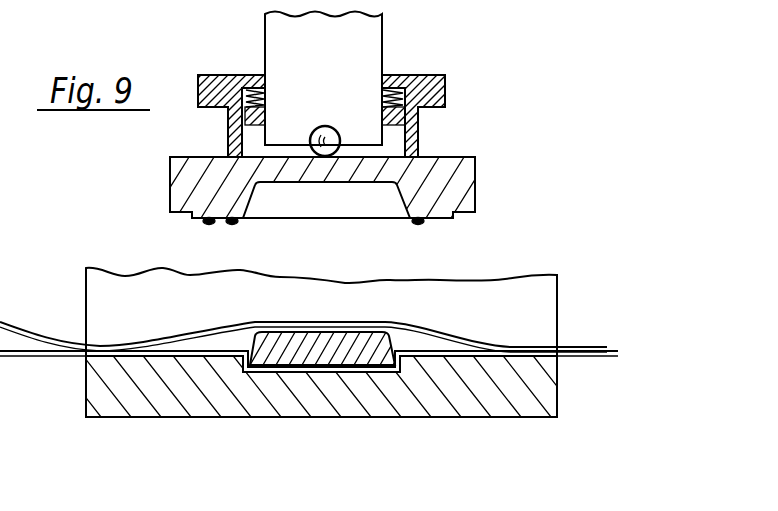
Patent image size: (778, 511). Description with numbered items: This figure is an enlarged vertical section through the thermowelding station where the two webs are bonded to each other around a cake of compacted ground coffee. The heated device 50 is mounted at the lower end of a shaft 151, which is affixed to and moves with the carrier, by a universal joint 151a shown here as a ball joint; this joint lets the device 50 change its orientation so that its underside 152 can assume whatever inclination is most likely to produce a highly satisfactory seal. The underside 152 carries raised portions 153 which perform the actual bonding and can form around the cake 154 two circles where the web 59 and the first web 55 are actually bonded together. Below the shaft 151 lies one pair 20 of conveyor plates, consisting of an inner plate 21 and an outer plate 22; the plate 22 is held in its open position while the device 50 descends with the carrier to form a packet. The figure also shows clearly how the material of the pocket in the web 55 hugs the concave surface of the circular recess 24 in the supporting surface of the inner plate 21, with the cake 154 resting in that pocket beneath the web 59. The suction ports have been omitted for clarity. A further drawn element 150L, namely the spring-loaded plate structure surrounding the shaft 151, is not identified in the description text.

The shaft 151 is at (288, 65).
The universal joint 151a is at (330, 126).
The spring-loaded guide plate 150L is at (323, 116).
The heated device 50 is at (467, 175).
The raised portions 153 is at (424, 220).
The underside 152 is at (431, 220).
The outer plate 22 is at (121, 287).
The inner plate 21 is at (513, 402).
The compacted batch or cake 154 is at (273, 360).
The circular recess 24 is at (372, 373).
The web 59 is at (38, 332).
The first web 55 is at (43, 358).
The pair 20 is at (578, 326).